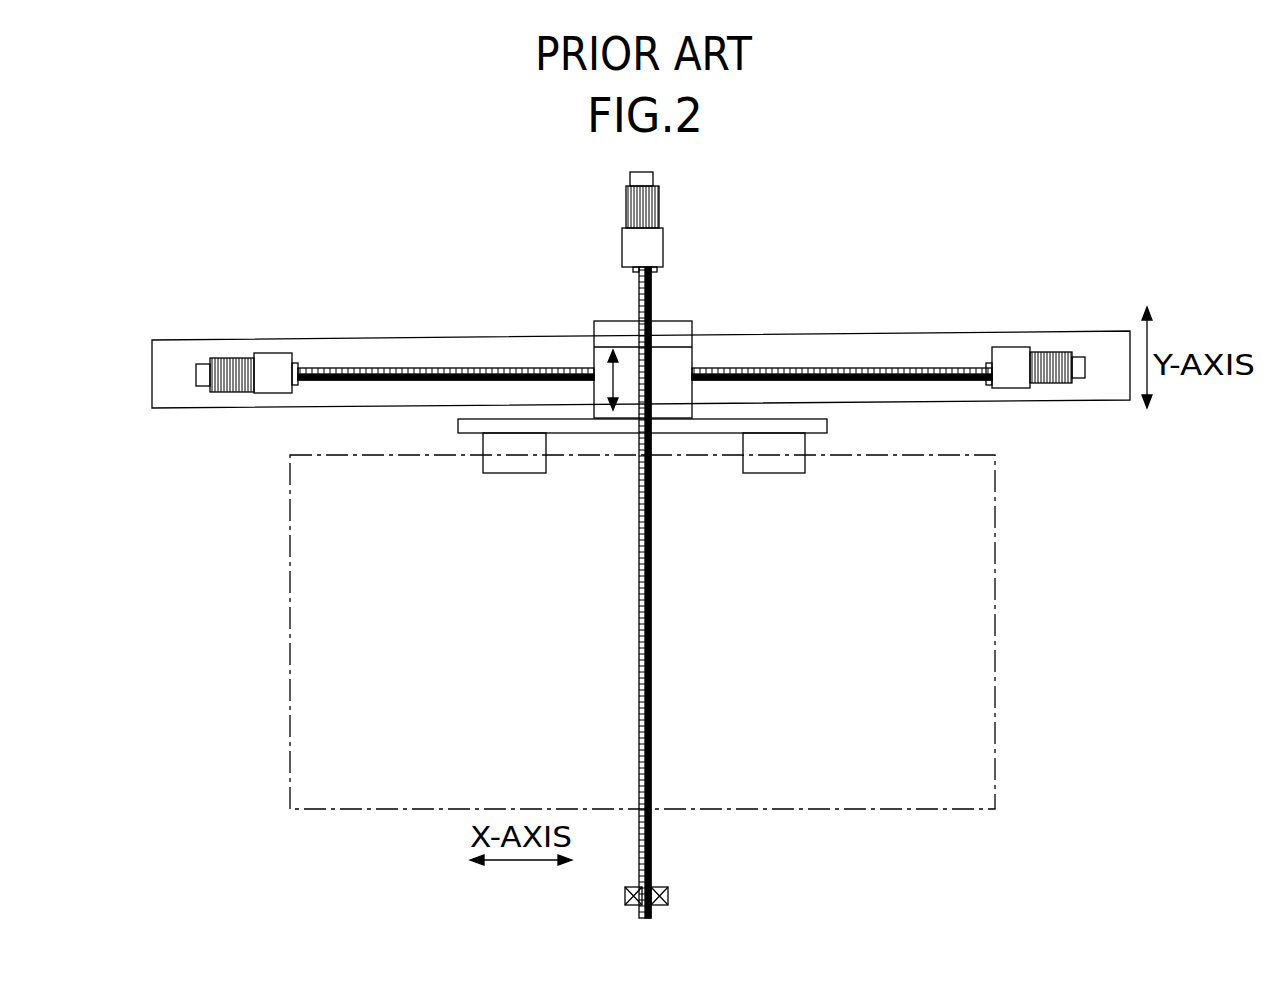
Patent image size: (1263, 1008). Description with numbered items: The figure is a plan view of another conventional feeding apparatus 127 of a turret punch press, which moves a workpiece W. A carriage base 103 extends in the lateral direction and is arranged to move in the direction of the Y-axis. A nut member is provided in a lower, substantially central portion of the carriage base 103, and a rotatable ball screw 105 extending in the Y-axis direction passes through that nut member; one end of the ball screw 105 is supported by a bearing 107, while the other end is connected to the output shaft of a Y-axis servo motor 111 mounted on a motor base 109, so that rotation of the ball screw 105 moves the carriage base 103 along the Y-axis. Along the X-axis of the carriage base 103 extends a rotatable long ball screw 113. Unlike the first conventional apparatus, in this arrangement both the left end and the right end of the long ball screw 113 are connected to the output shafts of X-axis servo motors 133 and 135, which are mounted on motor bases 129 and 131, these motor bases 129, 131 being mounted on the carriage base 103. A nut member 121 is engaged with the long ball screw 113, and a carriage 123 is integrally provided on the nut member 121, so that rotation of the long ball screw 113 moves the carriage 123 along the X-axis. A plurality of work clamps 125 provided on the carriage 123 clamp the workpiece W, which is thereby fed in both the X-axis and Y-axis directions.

The carriage base 103 is at (866, 337).
The ball screw 105 is at (652, 580).
The bearing 107 is at (668, 895).
The motor base 109 is at (622, 250).
The Y-axis servo motor 111 is at (626, 205).
The long ball screw 113 is at (362, 367).
The nut member 121 is at (676, 400).
The carriage 123 is at (457, 426).
The work clamps 125 is at (515, 473).
The feeding apparatus 127 is at (948, 266).
The motor base 129 is at (272, 395).
The motor base 131 is at (1014, 388).
The X-axis servo motor 133 is at (240, 358).
The X-axis servo motor 135 is at (1047, 352).
The workpiece W is at (997, 527).